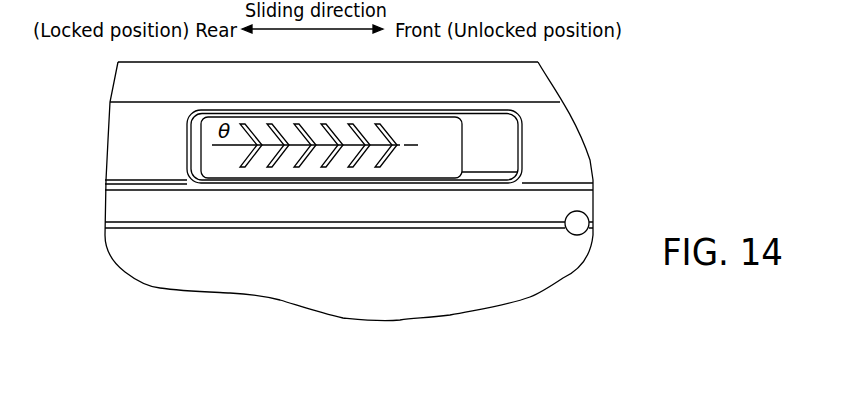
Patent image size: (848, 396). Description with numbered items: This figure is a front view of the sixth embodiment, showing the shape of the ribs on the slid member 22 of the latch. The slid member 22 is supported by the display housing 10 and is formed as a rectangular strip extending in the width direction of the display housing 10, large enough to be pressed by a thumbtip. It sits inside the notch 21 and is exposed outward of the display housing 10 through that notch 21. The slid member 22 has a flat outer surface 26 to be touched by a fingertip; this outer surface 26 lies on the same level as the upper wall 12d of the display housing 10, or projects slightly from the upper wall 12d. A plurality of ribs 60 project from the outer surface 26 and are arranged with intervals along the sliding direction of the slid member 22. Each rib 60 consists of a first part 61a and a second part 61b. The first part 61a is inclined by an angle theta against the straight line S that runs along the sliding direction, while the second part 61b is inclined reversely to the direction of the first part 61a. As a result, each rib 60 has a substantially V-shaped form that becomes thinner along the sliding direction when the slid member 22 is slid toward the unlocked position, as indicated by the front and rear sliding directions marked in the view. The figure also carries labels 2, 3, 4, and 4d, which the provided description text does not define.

The slide member 2 is at (343, 316).
The front cover 3 is at (555, 83).
The lower case 4 is at (555, 273).
The bottom wall 4d is at (137, 255).
The display housing 10 is at (117, 85).
The upper wall 12d is at (577, 158).
The notch 21 is at (510, 127).
The slid member 22 is at (440, 172).
The outer surface 26 is at (438, 130).
The ribs 60 is at (363, 158).
The first part 61a is at (243, 128).
The second part 61b is at (252, 148).
The straight line S is at (404, 143).